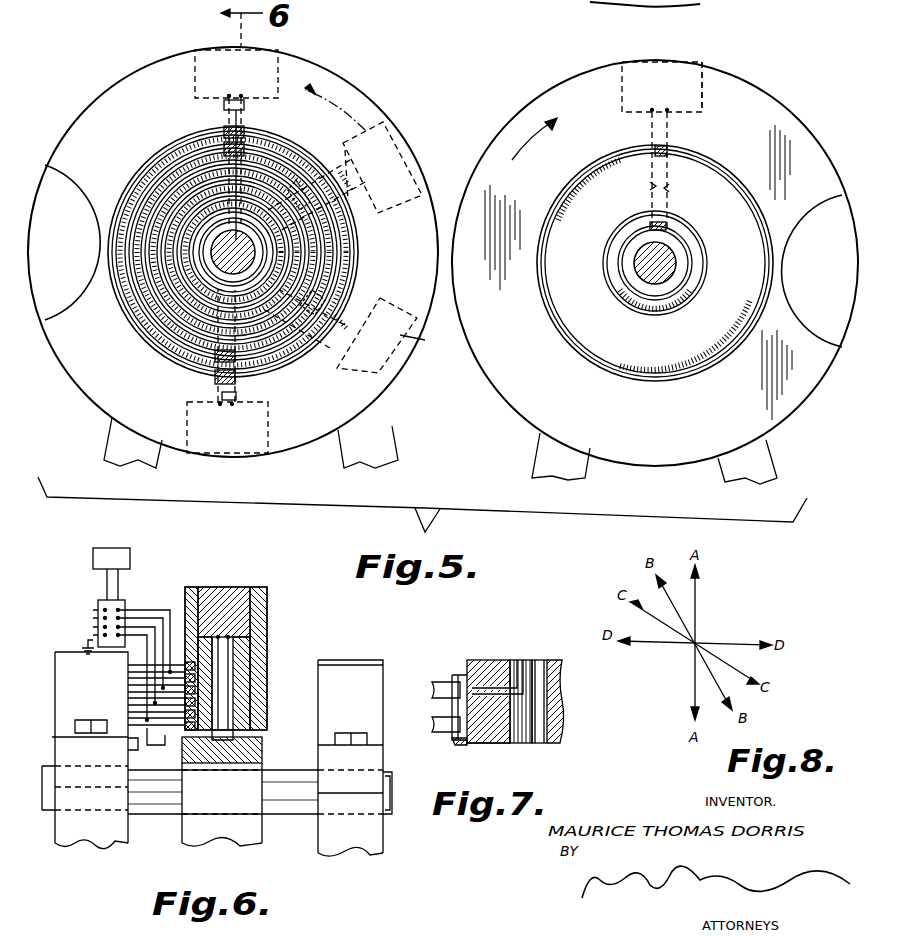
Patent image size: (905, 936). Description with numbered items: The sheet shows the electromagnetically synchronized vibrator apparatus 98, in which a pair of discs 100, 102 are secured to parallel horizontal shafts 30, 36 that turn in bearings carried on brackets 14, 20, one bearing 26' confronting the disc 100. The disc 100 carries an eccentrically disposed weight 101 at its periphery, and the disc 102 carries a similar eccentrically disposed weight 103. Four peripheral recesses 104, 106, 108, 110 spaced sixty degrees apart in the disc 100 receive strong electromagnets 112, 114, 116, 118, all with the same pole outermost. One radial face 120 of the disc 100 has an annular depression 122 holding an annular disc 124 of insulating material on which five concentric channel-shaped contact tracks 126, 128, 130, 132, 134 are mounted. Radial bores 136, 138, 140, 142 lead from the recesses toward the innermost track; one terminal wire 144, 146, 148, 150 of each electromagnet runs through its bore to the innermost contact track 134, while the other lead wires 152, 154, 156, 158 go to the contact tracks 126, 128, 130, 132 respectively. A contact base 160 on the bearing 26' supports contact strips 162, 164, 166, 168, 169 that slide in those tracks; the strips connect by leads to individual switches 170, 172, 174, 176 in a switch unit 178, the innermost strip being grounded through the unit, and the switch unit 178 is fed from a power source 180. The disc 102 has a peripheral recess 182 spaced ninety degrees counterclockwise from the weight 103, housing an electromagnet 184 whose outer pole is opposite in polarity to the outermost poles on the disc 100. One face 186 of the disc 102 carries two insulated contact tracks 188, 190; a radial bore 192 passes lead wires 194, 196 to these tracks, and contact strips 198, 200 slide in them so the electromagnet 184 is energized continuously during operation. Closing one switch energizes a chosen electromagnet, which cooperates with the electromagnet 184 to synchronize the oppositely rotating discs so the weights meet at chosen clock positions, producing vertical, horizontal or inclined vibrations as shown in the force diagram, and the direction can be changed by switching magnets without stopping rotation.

In FIG. 5, the bracket 14 is at (342, 452).
In FIG. 6, the bracket 14 is at (55, 828).
In FIG. 5, the bracket 20 is at (764, 478).
In FIG. 6, the bearing 26' is at (200, 745).
In FIG. 6, the shaft 30 is at (392, 790).
In FIG. 5, the shaft 36 is at (672, 248).
In FIG. 5, the vibrator apparatus 98 is at (395, 102).
In FIG. 5, the disc 100 is at (343, 80).
In FIG. 5, the eccentrically disposed weight 101 is at (72, 175).
In FIG. 5, the disc 102 is at (750, 85).
In FIG. 5, the eccentrically disposed weight 103 is at (812, 212).
In FIG. 5, the peripheral recess 104 is at (205, 88).
In FIG. 6, the peripheral recess 104 is at (250, 602).
In FIG. 5, the peripheral recess 106 is at (415, 180).
In FIG. 5, the peripheral recess 108 is at (392, 300).
In FIG. 5, the peripheral recess 110 is at (266, 414).
In FIG. 5, the electromagnet 112 is at (220, 50).
In FIG. 6, the electromagnet 112 is at (230, 587).
In FIG. 5, the electromagnet 114 is at (397, 135).
In FIG. 5, the electromagnet 116 is at (412, 340).
In FIG. 5, the electromagnet 118 is at (252, 448).
In FIG. 5, the radial face 120 is at (110, 230).
In FIG. 6, the radial face 120 is at (187, 592).
In FIG. 7, the radial face 120 is at (458, 663).
In FIG. 7, the annular depression 122 is at (470, 744).
In FIG. 6, the annular disc of insulating material 124 is at (222, 682).
In FIG. 7, the annular disc of insulating material 124 is at (497, 692).
In FIG. 5, the contact track 126 is at (122, 292).
In FIG. 6, the contact track 126 is at (200, 683).
In FIG. 7, the contact track 126 is at (455, 672).
In FIG. 5, the contact track 128 is at (148, 200).
In FIG. 6, the contact track 128 is at (226, 665).
In FIG. 7, the contact track 128 is at (452, 742).
In FIG. 5, the contact track 130 is at (165, 300).
In FIG. 6, the contact track 130 is at (222, 700).
In FIG. 5, the contact track 132 is at (325, 240).
In FIG. 6, the contact track 132 is at (222, 718).
In FIG. 5, the innermost contact track 134 is at (233, 252).
In FIG. 6, the innermost contact track 134 is at (186, 766).
In FIG. 5, the radial bore 136 is at (208, 108).
In FIG. 6, the radial bore 136 is at (262, 745).
In FIG. 7, the radial bore 136 is at (562, 690).
In FIG. 5, the radial bore 138 is at (362, 165).
In FIG. 5, the radial bore 140 is at (355, 300).
In FIG. 5, the radial bore 142 is at (236, 386).
In FIG. 5, the terminal wire 144 is at (244, 104).
In FIG. 6, the terminal wire 144 is at (257, 648).
In FIG. 7, the terminal wire 144 is at (540, 660).
In FIG. 5, the terminal wire 146 is at (362, 215).
In FIG. 5, the terminal wire 148 is at (338, 350).
In FIG. 5, the terminal wire 150 is at (218, 386).
In FIG. 5, the lead wire 152 is at (222, 122).
In FIG. 6, the lead wire 152 is at (185, 604).
In FIG. 7, the lead wire 152 is at (512, 660).
In FIG. 5, the lead wire 154 is at (342, 155).
In FIG. 5, the lead wire 156 is at (360, 318).
In FIG. 5, the lead wire 158 is at (240, 398).
In FIG. 6, the contact base 160 is at (140, 700).
In FIG. 5, the contact strip 162 is at (248, 135).
In FIG. 6, the contact strip 162 is at (140, 670).
In FIG. 7, the contact strip 162 is at (445, 682).
In FIG. 5, the contact strip 164 is at (200, 147).
In FIG. 6, the contact strip 164 is at (140, 686).
In FIG. 7, the contact strip 164 is at (445, 718).
In FIG. 6, the contact strip 166 is at (140, 716).
In FIG. 6, the contact strip 168 is at (158, 738).
In FIG. 6, the contact strip 169 is at (128, 750).
In FIG. 6, the switch 170 is at (100, 604).
In FIG. 6, the switch 172 is at (93, 608).
In FIG. 6, the switch 174 is at (93, 618).
In FIG. 6, the switch 176 is at (93, 630).
In FIG. 6, the switch unit 178 is at (122, 598).
In FIG. 6, the power source 180 is at (102, 553).
In FIG. 5, the peripheral recess 182 is at (700, 98).
In FIG. 5, the electromagnet 184 is at (690, 72).
In FIG. 5, the face 186 is at (505, 392).
In FIG. 5, the contact track 188 is at (733, 175).
In FIG. 5, the innermost contact track 190 is at (688, 290).
In FIG. 5, the radial bore 192 is at (650, 186).
In FIG. 5, the lead wire 194 is at (650, 128).
In FIG. 5, the lead wire 196 is at (668, 195).
In FIG. 5, the contact strip 198 is at (672, 152).
In FIG. 5, the contact strip 200 is at (650, 226).